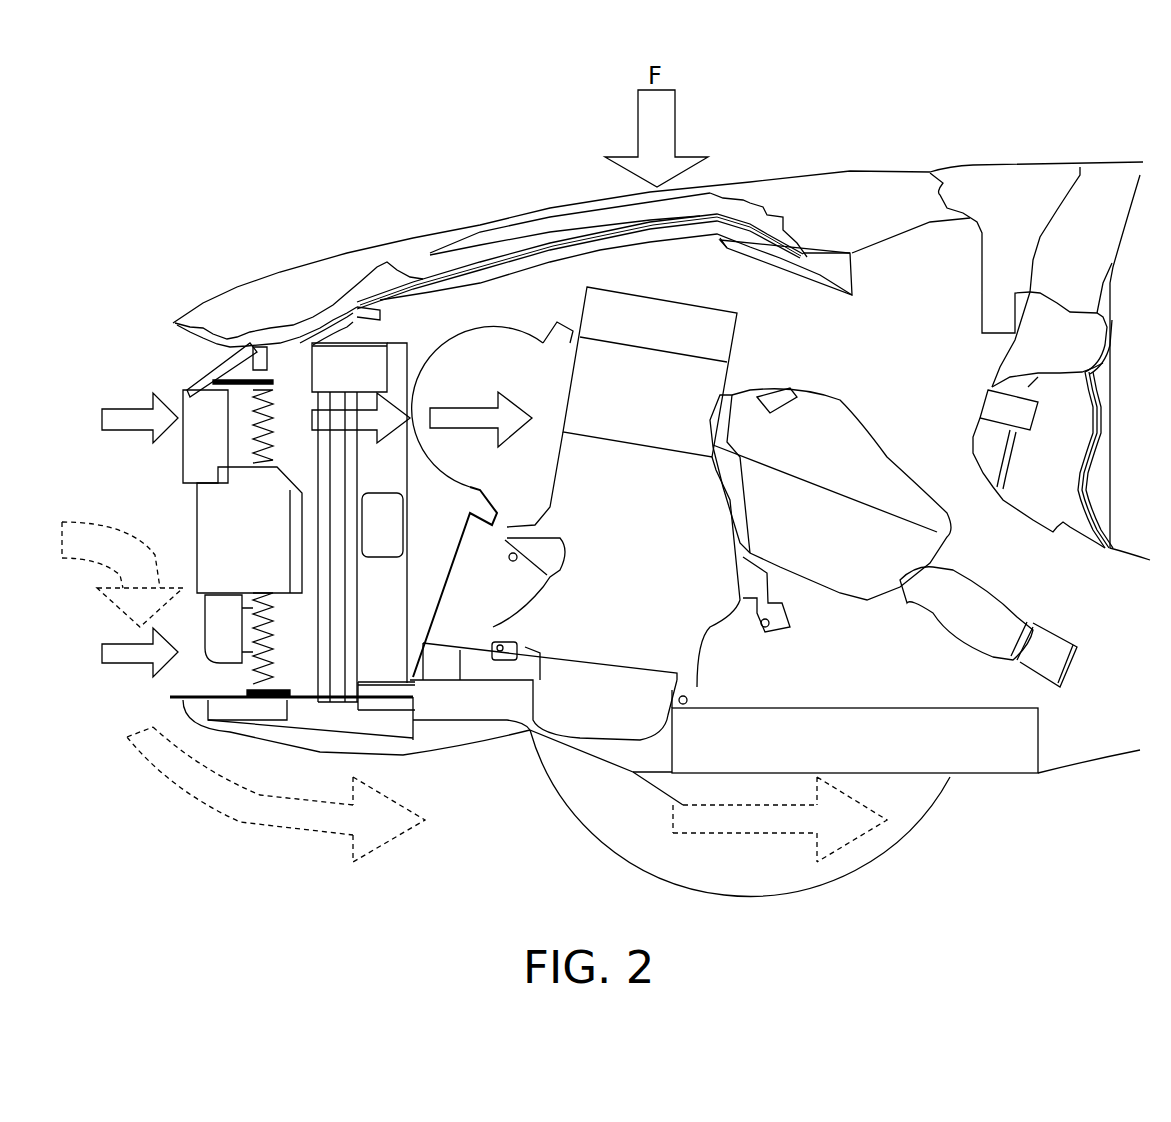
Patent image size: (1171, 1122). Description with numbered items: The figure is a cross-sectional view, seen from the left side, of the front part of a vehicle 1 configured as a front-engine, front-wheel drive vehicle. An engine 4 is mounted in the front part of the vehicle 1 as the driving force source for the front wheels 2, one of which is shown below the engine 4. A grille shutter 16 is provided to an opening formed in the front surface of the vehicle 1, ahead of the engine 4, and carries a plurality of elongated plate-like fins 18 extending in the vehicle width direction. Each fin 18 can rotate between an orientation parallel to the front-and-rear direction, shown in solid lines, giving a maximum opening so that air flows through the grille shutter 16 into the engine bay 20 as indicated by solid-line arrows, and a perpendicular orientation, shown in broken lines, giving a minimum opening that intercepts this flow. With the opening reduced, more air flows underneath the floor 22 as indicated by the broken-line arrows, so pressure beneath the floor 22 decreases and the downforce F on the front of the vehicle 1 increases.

The vehicle 1 is at (203, 203).
The front wheel 2 is at (913, 823).
The engine 4 is at (640, 575).
The grille shutter 16 is at (250, 373).
The fin 18 is at (270, 427).
The engine bay 20 is at (908, 423).
The floor 22 is at (983, 775).